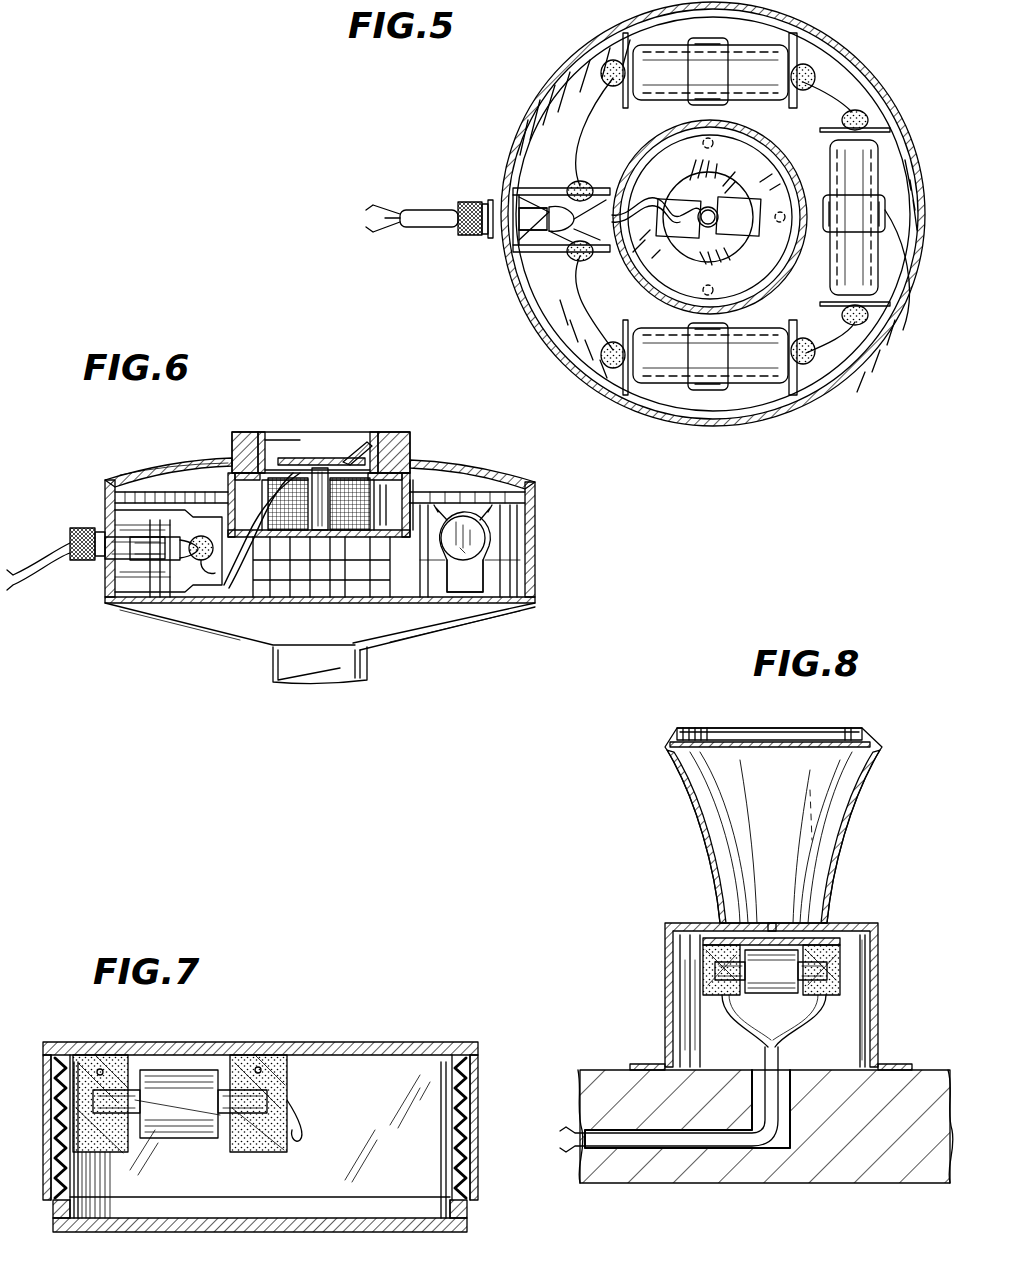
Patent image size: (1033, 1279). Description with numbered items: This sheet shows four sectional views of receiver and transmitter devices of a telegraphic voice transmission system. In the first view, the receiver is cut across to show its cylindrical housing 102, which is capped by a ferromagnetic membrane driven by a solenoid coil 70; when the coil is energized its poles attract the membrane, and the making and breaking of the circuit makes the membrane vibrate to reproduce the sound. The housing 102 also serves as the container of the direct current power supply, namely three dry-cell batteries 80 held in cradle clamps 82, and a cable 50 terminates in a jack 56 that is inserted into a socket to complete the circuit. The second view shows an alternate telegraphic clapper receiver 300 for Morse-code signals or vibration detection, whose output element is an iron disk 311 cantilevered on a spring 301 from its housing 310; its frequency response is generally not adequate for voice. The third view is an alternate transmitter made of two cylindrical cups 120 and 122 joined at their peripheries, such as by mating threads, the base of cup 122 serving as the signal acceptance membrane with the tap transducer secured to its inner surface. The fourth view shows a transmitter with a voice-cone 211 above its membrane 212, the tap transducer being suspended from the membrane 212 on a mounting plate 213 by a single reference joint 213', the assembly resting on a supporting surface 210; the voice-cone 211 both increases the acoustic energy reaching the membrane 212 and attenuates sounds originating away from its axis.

In FIG. 5, the power cable 50 is at (438, 211).
In FIG. 5, the jack 56 is at (513, 195).
In FIG. 5, the solenoid coil 70 is at (755, 168).
In FIG. 5, the dry-cell batteries 80 is at (830, 276).
In FIG. 5, the cradle clamps 82 is at (882, 236).
In FIG. 5, the cylindrical housing 102 is at (555, 297).
In FIG. 6, the telegraphic clapper receiver 300 is at (413, 634).
In FIG. 6, the spring 301 is at (362, 432).
In FIG. 6, the housing 310 is at (535, 533).
In FIG. 6, the iron disk 311 is at (284, 445).
In FIG. 7, the cylindrical cup 120 is at (467, 1220).
In FIG. 7, the cylindrical cup 122 is at (422, 1042).
In FIG. 8, the floor 210 is at (845, 1163).
In FIG. 8, the voice-cone 211 is at (840, 843).
In FIG. 8, the membrane 212 is at (755, 927).
In FIG. 8, the mounting plate 213 is at (776, 979).
In FIG. 8, the reference joint 213' is at (774, 948).